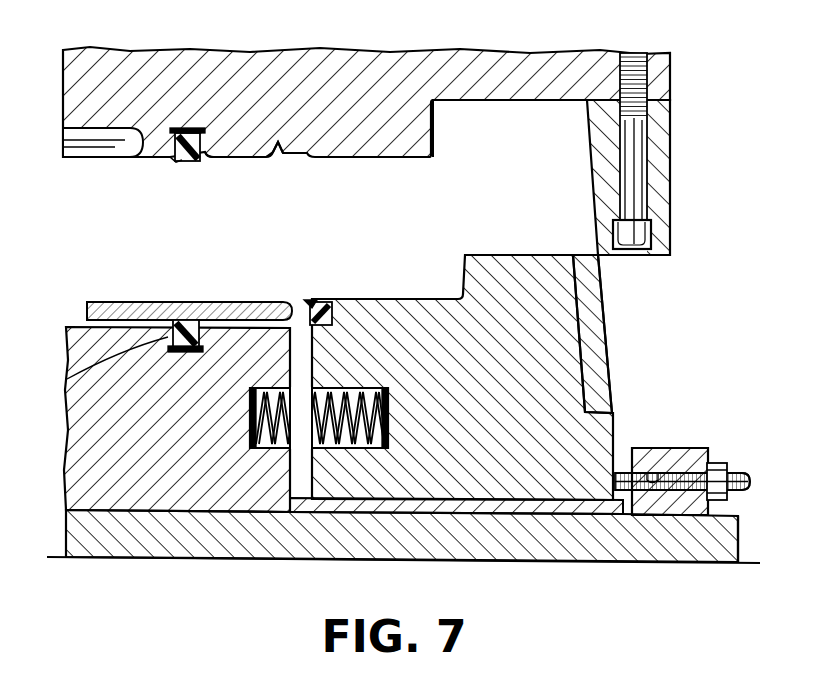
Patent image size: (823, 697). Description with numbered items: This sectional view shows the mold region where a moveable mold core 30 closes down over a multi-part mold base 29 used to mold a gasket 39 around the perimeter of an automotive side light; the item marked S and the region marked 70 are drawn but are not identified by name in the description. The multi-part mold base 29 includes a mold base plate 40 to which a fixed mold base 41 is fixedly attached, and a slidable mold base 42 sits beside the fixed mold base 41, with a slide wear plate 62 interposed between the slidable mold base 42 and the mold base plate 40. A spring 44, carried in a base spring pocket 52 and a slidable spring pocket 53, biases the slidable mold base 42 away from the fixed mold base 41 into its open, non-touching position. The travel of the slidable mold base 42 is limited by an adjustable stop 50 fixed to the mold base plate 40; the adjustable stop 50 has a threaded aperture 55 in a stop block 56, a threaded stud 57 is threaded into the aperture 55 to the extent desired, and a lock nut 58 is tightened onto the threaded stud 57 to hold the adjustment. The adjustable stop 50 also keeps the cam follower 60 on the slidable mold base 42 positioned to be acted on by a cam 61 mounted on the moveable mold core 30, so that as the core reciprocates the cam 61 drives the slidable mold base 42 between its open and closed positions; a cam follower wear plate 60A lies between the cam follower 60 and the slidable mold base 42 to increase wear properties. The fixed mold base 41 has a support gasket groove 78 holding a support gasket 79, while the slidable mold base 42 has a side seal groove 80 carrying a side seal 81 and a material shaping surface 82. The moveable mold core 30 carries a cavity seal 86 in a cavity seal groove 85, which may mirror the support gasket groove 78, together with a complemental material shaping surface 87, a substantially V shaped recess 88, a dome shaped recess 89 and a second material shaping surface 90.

The moveable mold core 30 is at (355, 70).
The gasket 39 is at (670, 65).
The cam 61 is at (667, 167).
The recess 70 is at (488, 100).
The cavity seal 86 is at (187, 128).
The cavity seal groove 85 is at (178, 160).
The dome shaped recess 89 is at (213, 160).
The second material shaping surface 90 is at (242, 160).
The substantially V shaped recess 88 is at (279, 148).
The complemental material shaping surface 87 is at (303, 153).
The fixed mold base 41 is at (120, 472).
The slidable mold base 42 is at (482, 298).
The cam follower 60 is at (603, 312).
The cam follower wear plate 60A is at (595, 355).
The slide wear plate 62 is at (505, 507).
The mold base plate 40 is at (296, 303).
The multi-part mold base 29 is at (118, 560).
The stop block 56 is at (672, 522).
The adjustable stop 50 is at (705, 440).
The lock nut 58 is at (727, 462).
The threaded stud 57 is at (752, 492).
The threaded aperture 55 is at (650, 477).
The base spring pocket 52 is at (273, 448).
The slidable spring pocket 53 is at (349, 448).
The spring 44 is at (290, 500).
The sheet S is at (112, 308).
The support gasket 79 is at (177, 325).
The support gasket groove 78 is at (170, 335).
The side seal groove 80 is at (320, 300).
The side seal 81 is at (333, 317).
The material shaping surface 82 is at (308, 300).